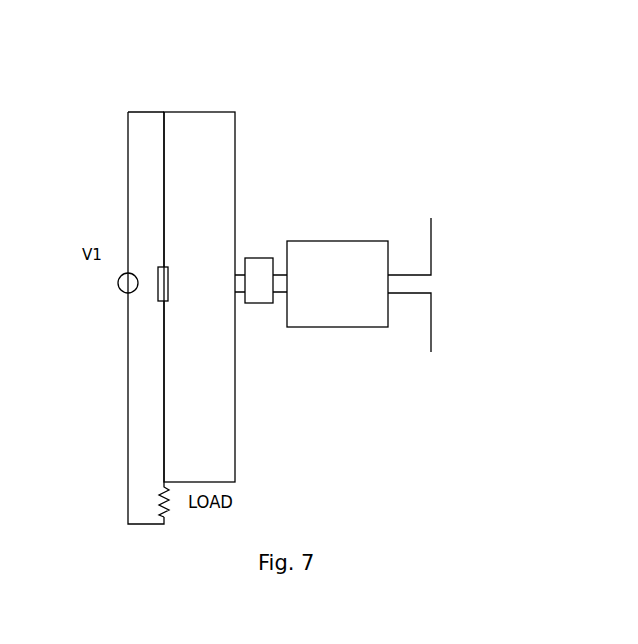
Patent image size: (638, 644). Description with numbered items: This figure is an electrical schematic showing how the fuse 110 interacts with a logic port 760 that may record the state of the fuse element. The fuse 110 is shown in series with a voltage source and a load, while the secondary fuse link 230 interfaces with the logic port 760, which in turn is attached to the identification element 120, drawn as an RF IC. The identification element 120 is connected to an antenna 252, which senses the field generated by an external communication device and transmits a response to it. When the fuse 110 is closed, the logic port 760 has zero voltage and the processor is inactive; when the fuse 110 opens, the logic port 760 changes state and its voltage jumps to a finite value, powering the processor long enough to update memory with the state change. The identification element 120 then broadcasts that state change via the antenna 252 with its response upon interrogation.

The fuse 110 is at (163, 265).
The secondary fuse link 230 is at (235, 137).
The logic port 760 is at (259, 304).
The identification element 120 is at (356, 327).
The antenna 252 is at (432, 308).